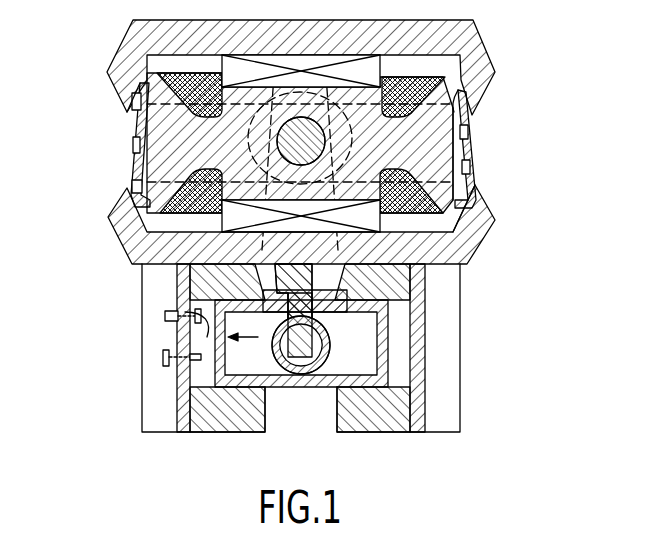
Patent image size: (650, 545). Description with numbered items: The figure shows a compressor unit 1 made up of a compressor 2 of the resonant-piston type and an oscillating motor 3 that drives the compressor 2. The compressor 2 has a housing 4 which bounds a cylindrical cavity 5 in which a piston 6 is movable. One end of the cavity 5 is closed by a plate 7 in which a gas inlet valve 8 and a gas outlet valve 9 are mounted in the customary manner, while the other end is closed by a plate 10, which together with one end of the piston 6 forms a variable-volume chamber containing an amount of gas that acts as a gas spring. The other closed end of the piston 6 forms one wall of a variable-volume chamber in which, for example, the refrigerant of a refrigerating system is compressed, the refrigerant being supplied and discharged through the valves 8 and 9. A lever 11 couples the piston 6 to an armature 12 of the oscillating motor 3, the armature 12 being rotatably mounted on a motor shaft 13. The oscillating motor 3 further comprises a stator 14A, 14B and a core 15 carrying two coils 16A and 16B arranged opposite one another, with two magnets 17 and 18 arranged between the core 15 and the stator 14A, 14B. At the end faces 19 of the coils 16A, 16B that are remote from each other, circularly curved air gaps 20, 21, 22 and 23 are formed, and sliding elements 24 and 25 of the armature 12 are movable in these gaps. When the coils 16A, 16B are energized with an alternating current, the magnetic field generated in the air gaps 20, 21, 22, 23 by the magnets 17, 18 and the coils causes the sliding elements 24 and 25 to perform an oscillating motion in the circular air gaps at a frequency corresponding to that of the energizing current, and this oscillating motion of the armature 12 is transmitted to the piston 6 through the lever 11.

The compressor unit 1 is at (503, 198).
The compressor 2 is at (452, 365).
The oscillating motor 3 is at (473, 24).
The housing 4 is at (397, 410).
The cylindrical cavity 5 is at (397, 371).
The piston 6 is at (381, 328).
The plate 7 is at (180, 330).
The gas inlet valve 8 is at (163, 360).
The gas outlet valve 9 is at (207, 337).
The plate 10 is at (415, 338).
The lever 11 is at (412, 284).
The armature 12 is at (455, 170).
The motor shaft 13 is at (292, 150).
The stator 14A is at (470, 243).
The stator 14B is at (467, 82).
The core 15 is at (453, 207).
The coil 16A is at (223, 218).
The coil 16B is at (420, 73).
The magnet 17 is at (240, 72).
The magnet 18 is at (132, 250).
The end faces 19 is at (135, 61).
The air gap 20 is at (120, 53).
The air gap 21 is at (143, 200).
The air gap 22 is at (463, 112).
The air gap 23 is at (452, 215).
The sliding element 24 is at (130, 115).
The sliding element 25 is at (466, 162).